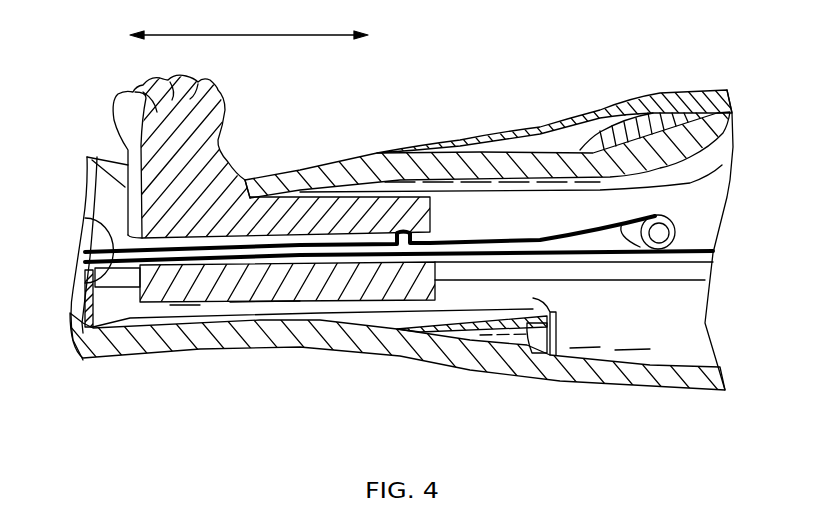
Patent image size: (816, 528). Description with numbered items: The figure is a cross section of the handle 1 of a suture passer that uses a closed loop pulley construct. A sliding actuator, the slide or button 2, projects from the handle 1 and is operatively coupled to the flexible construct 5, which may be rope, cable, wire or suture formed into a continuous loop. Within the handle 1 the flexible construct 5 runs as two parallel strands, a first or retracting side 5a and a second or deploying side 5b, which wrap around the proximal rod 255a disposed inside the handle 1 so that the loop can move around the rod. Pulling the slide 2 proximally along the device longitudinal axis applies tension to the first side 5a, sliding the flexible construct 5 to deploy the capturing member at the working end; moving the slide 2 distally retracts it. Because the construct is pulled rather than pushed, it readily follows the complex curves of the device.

The handle 1 is at (657, 390).
The slide or button 2 is at (155, 94).
The flexible construct 5 is at (371, 301).
The first or retracting side 5a is at (88, 220).
The second or deploying side 5b is at (95, 285).
The proximal rod 255a is at (668, 232).